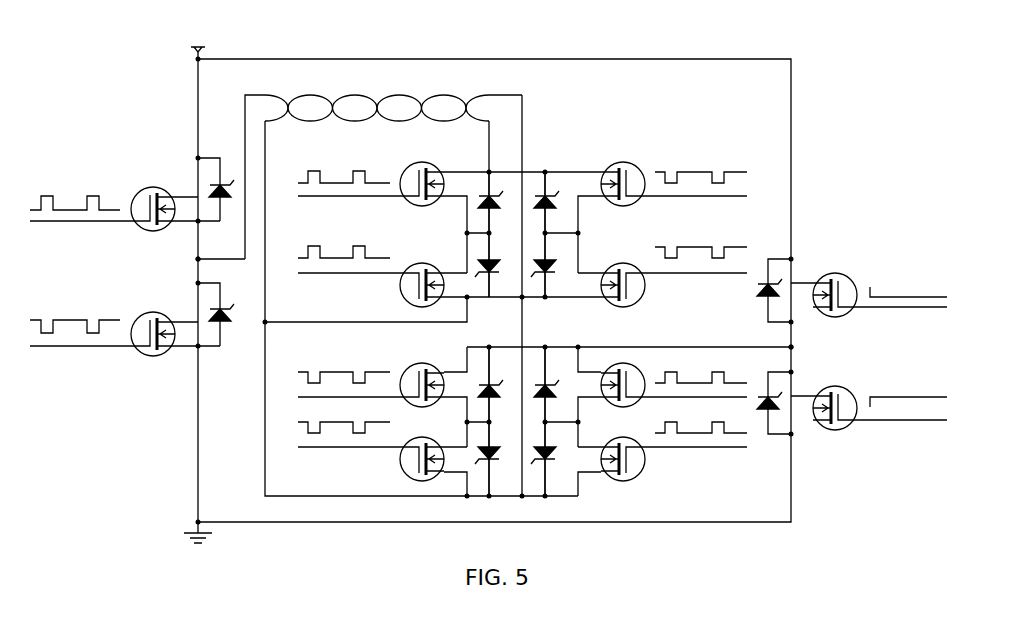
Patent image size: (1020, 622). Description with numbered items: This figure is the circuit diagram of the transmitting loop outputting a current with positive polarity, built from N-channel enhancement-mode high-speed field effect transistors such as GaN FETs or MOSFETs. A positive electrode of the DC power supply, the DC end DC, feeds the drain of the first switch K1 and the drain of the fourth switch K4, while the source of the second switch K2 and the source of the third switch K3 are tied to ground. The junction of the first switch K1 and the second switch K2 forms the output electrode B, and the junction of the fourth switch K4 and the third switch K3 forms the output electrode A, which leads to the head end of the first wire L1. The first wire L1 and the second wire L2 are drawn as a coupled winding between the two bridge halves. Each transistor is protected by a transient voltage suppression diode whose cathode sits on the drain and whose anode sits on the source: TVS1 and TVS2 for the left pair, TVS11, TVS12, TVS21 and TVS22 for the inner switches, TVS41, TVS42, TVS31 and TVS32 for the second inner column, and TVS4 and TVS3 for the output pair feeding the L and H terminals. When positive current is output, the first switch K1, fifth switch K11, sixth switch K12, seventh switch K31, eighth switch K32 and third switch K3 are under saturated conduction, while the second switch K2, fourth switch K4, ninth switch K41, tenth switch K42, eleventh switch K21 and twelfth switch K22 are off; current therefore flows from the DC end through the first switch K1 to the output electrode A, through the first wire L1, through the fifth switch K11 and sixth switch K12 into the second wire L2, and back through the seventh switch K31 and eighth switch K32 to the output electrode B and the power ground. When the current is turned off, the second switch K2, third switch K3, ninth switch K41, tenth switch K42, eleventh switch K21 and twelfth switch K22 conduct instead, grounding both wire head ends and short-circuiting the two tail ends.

The DC end DC is at (198, 42).
The output electrode A is at (193, 253).
The output electrode B is at (780, 340).
The first switch K1 is at (125, 200).
The second switch K2 is at (125, 324).
The transient voltage suppression diode TVS1 is at (228, 189).
The transient voltage suppression diode TVS2 is at (228, 314).
The first wire L1 is at (315, 101).
The second wire L2 is at (449, 101).
The fifth switch K11 is at (371, 175).
The sixth switch K12 is at (371, 274).
The eleventh switch K21 is at (371, 375).
The twelfth switch K22 is at (371, 450).
The seventh switch K31 is at (674, 381).
The eighth switch K32 is at (674, 451).
The ninth switch K41 is at (674, 175).
The tenth switch K42 is at (674, 274).
The transient voltage suppression diode TVS11 is at (508, 202).
The transient voltage suppression diode TVS12 is at (507, 265).
The transient voltage suppression diode TVS21 is at (508, 384).
The transient voltage suppression diode TVS22 is at (507, 459).
The transient voltage suppression diode TVS31 is at (564, 384).
The transient voltage suppression diode TVS32 is at (563, 459).
The transient voltage suppression diode TVS41 is at (564, 202).
The transient voltage suppression diode TVS42 is at (563, 265).
The third switch K3 is at (869, 399).
The fourth switch K4 is at (869, 286).
The transient voltage suppression diode TVS3 is at (781, 403).
The transient voltage suppression diode TVS4 is at (781, 290).
The low-side output terminal L is at (908, 291).
The high-side output terminal H is at (908, 393).